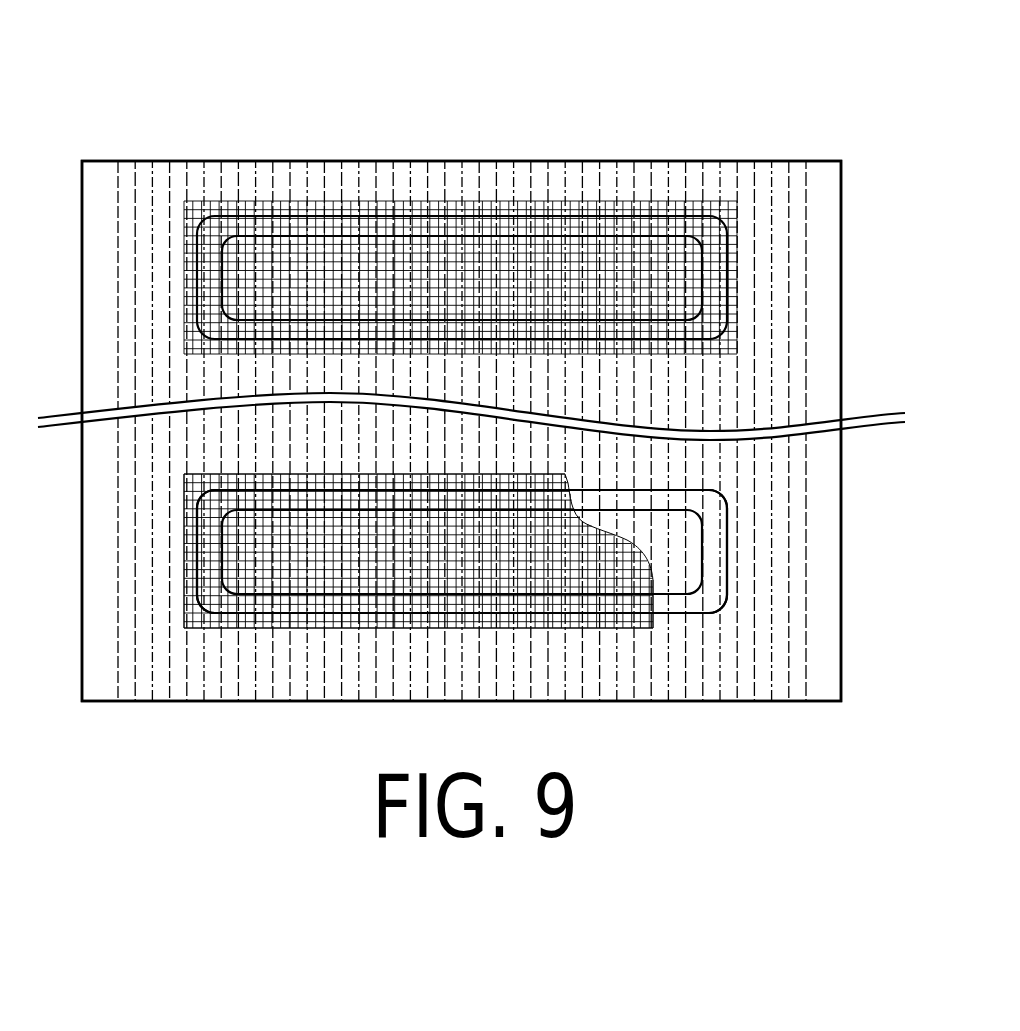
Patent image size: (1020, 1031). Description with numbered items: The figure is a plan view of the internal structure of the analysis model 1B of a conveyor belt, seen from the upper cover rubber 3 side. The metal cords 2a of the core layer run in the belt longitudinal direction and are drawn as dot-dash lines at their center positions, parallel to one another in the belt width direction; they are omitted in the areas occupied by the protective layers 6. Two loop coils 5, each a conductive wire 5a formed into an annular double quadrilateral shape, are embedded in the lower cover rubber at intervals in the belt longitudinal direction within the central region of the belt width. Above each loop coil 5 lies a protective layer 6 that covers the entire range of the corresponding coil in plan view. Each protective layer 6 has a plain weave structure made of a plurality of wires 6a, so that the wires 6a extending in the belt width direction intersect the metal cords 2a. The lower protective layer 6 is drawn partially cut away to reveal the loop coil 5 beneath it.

The analysis model 1B is at (750, 128).
The metal cords 2a is at (239, 170).
The upper cover rubber 3 is at (814, 175).
The loop coils 5 is at (762, 537).
The conductive wire 5a is at (729, 565).
The protective layers 6 is at (616, 173).
The wires 6a is at (730, 240).